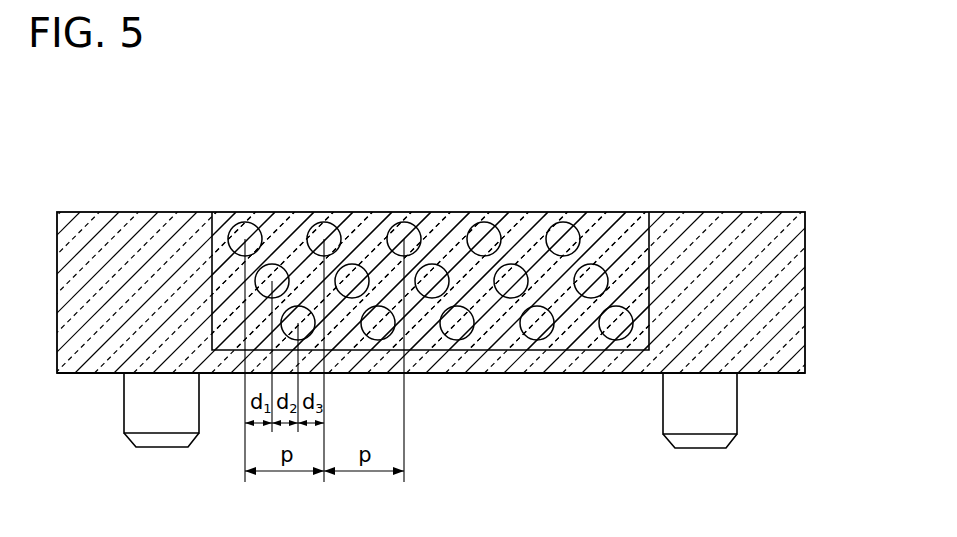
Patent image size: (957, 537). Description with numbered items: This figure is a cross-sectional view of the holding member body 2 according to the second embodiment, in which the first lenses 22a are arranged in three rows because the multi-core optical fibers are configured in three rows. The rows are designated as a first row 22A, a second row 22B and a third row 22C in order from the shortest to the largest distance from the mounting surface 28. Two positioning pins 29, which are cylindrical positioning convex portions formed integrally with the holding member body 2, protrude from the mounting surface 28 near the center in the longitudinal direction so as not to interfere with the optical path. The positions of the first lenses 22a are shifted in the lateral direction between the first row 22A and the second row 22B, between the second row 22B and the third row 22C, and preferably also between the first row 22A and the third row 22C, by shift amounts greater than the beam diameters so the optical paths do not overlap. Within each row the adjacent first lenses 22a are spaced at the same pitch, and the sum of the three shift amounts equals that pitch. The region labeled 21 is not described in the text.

The holding member body 2 is at (729, 204).
The light transmissive member / sealing resin 21 is at (618, 246).
The first lenses 22a is at (484, 238).
The first row 22A is at (810, 306).
The second row 22B is at (810, 262).
The third row 22C is at (810, 220).
The mounting surface 28 is at (543, 374).
The positioning pins 29 is at (153, 418).